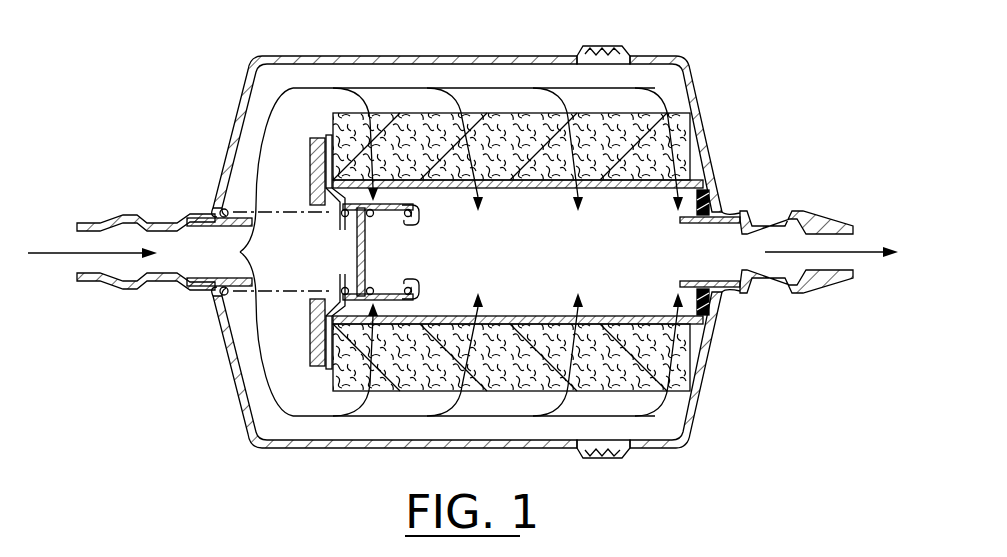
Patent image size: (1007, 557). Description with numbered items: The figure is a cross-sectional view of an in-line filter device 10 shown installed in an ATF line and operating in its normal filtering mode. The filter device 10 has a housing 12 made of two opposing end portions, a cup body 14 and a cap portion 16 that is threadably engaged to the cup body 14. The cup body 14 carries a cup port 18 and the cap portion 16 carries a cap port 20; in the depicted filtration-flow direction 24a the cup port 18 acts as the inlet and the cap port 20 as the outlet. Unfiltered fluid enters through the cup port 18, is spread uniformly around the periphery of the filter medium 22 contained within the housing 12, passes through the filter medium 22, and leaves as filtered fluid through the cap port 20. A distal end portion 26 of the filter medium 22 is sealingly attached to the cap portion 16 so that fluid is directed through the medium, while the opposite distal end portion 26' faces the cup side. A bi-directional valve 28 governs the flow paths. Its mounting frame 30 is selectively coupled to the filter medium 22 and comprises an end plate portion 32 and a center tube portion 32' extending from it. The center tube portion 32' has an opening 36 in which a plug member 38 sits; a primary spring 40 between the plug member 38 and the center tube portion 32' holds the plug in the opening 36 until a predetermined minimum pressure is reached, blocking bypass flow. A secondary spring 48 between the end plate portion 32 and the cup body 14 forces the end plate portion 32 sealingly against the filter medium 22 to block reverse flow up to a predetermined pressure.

The in-line filter device 10 is at (155, 100).
The housing 12 is at (248, 60).
The cup body 14 is at (223, 150).
The cap portion 16 is at (680, 68).
The cup port 18 is at (90, 233).
The cap port 20 is at (850, 232).
The filter medium 22 is at (497, 113).
The filtration-flow direction 24a is at (48, 256).
The distal end portion 26 is at (738, 164).
The distal end portion 26' is at (452, 390).
The bi-directional valve 28 is at (430, 209).
The mounting frame 30 is at (305, 130).
The end plate portion 32 is at (427, 182).
The center tube portion 32' is at (514, 321).
The opening 36 is at (356, 266).
The plug member 38 is at (364, 262).
The primary spring 40 is at (402, 283).
The secondary spring 48 is at (224, 314).